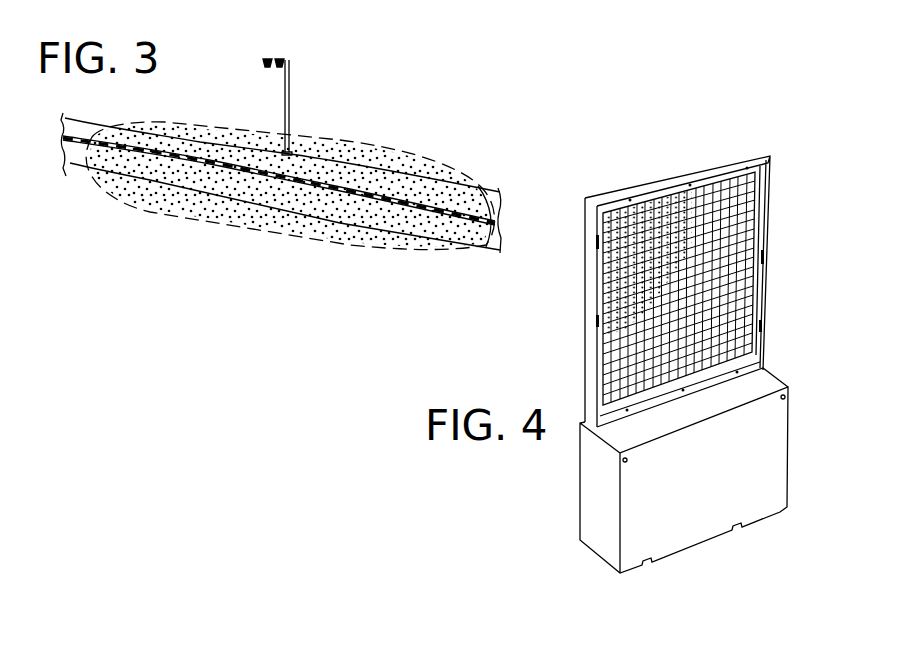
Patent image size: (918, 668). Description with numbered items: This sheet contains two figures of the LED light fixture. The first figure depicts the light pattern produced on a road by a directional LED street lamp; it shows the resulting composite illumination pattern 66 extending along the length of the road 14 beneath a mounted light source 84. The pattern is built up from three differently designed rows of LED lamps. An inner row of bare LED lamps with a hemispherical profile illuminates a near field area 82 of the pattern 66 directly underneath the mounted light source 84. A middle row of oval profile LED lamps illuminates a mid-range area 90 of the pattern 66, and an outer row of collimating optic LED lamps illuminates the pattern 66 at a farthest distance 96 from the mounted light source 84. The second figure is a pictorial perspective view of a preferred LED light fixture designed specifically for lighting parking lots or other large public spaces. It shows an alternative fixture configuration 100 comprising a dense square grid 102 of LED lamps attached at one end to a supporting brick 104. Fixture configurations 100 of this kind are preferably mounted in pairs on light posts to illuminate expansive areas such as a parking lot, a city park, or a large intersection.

In FIG. 3, the road 14 is at (85, 153).
In FIG. 3, the near field area 82 is at (302, 146).
In FIG. 3, the mounted light source 84 is at (265, 58).
In FIG. 3, the mid-range area 90 is at (360, 157).
In FIG. 3, the farthest distance 96 is at (420, 160).
In FIG. 3, the composite illumination pattern 66 is at (502, 193).
In FIG. 4, the fixture configuration 100 is at (718, 364).
In FIG. 4, the dense square grid 102 is at (698, 282).
In FIG. 4, the supporting brick 104 is at (735, 482).